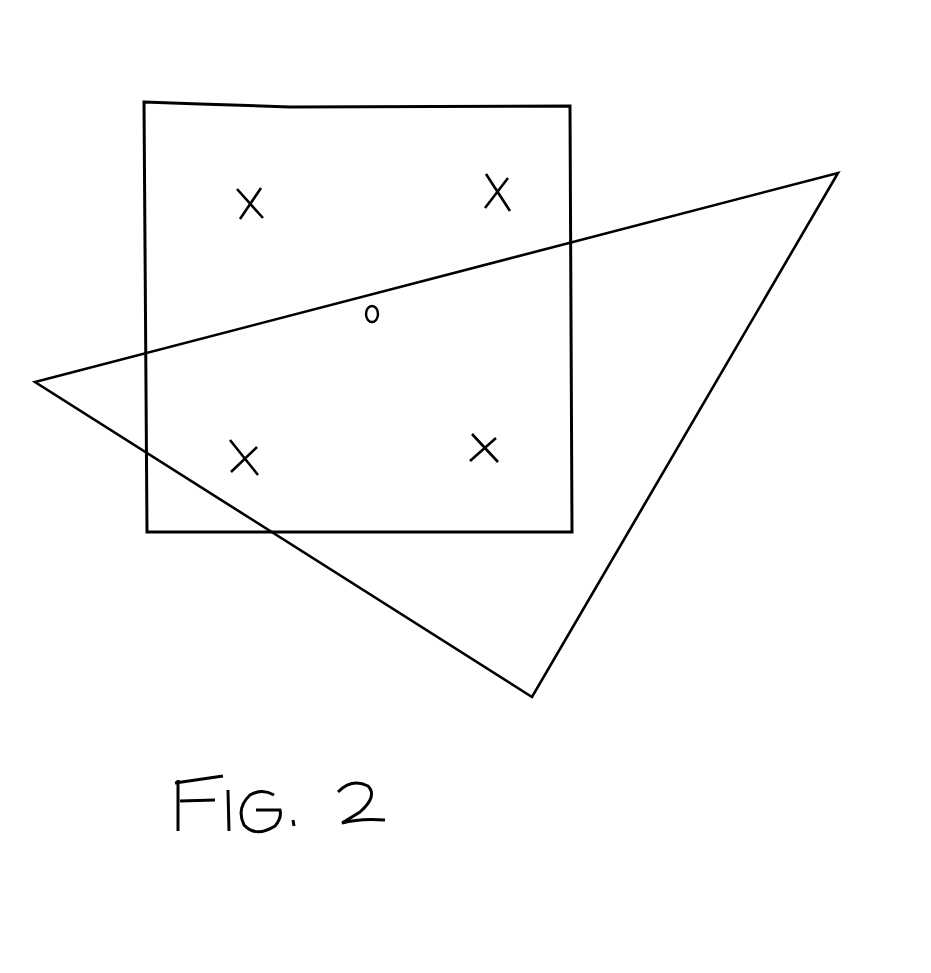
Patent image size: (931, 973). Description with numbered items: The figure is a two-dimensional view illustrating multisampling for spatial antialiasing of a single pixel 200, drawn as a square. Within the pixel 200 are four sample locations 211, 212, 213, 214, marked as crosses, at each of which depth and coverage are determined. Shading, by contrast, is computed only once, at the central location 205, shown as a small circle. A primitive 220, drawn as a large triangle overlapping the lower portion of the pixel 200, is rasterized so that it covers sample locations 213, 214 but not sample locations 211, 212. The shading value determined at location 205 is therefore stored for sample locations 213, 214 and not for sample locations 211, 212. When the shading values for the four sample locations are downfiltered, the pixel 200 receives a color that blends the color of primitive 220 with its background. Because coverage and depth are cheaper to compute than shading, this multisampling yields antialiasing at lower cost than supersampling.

The pixel 200 is at (415, 110).
The location 205 is at (374, 306).
The sample location 211 is at (246, 213).
The sample location 212 is at (495, 172).
The sample location 213 is at (243, 448).
The sample location 214 is at (482, 440).
The primitive 220 is at (697, 366).